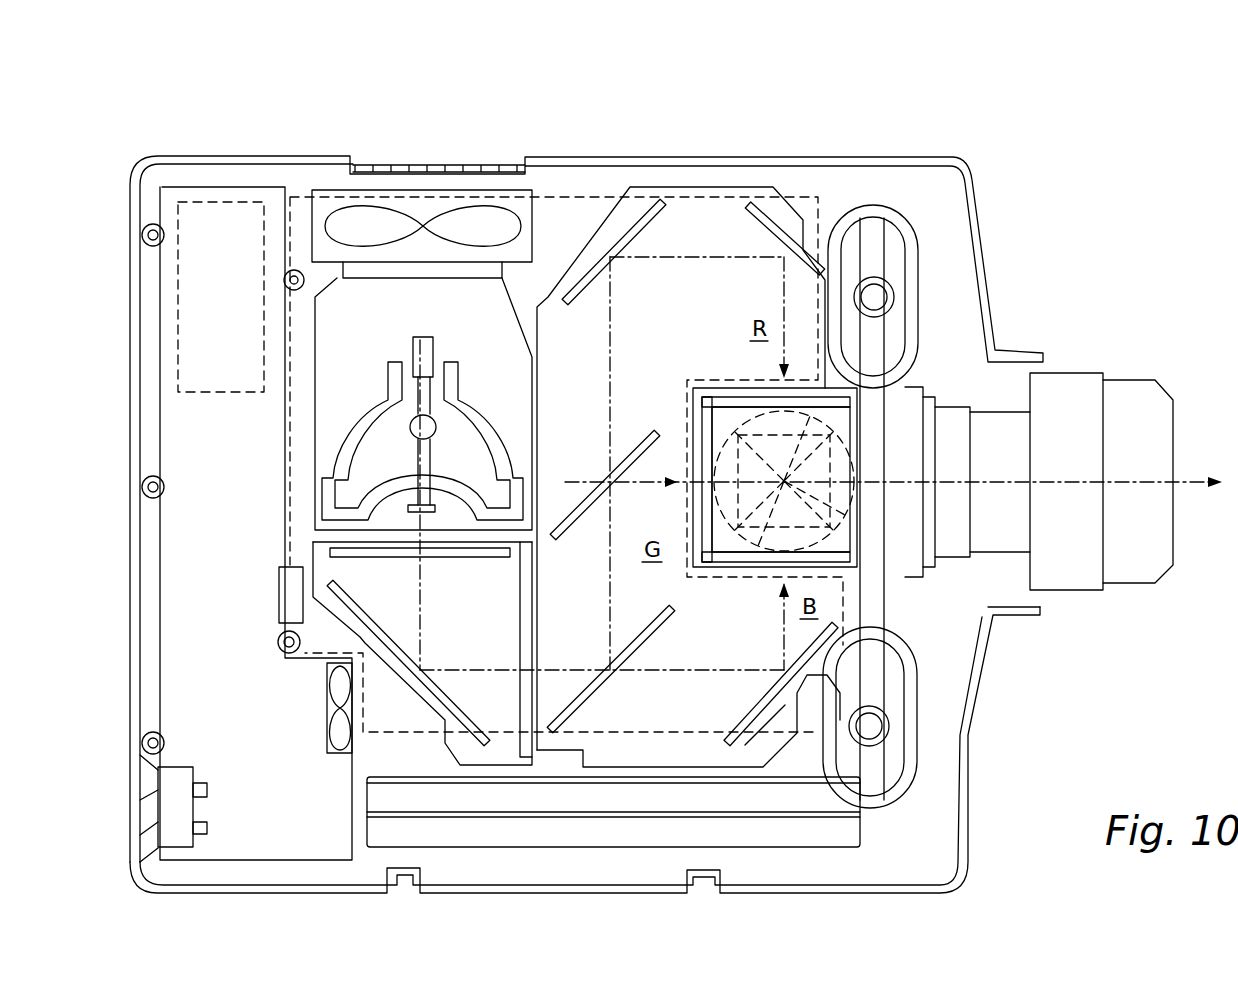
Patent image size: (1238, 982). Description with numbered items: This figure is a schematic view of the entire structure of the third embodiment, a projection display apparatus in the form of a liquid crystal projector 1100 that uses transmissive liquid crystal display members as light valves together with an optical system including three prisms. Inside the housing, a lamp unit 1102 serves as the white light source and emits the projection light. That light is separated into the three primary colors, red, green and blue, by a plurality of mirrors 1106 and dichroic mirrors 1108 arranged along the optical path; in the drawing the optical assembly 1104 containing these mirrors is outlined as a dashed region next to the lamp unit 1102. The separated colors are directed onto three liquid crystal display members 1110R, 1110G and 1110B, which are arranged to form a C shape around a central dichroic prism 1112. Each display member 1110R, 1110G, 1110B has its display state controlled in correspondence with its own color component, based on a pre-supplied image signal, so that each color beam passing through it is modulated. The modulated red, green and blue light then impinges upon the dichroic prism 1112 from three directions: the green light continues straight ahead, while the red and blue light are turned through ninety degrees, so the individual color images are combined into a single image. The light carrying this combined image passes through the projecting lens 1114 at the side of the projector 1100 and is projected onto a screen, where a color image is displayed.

The liquid crystal projector 1100 is at (977, 170).
The lamp unit 1102 is at (500, 310).
The optical unit 1104 is at (640, 200).
The mirrors 1106 is at (752, 215).
The dichroic mirrors 1108 is at (640, 633).
The liquid crystal display member 1110R is at (742, 388).
The liquid crystal display member 1110G is at (688, 510).
The liquid crystal display member 1110B is at (742, 567).
The dichroic prism 1112 is at (838, 540).
The projecting lens 1114 is at (1135, 395).